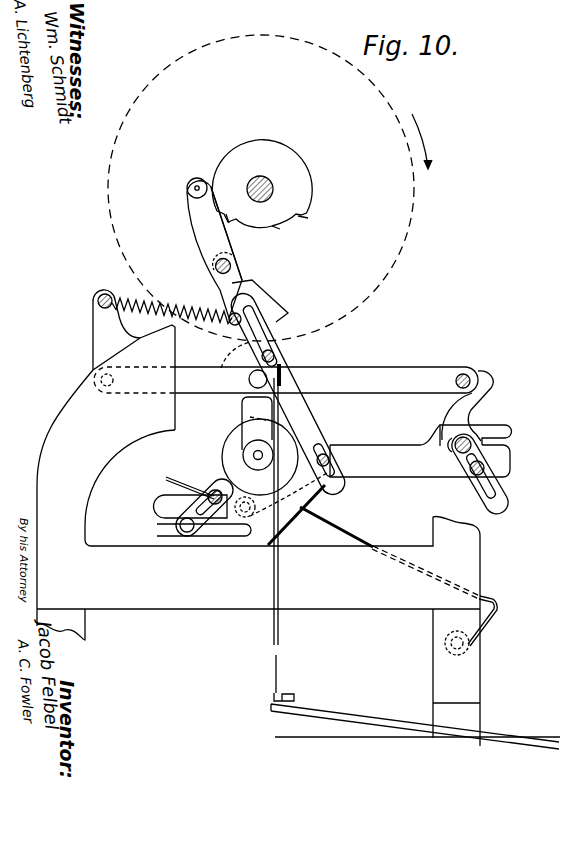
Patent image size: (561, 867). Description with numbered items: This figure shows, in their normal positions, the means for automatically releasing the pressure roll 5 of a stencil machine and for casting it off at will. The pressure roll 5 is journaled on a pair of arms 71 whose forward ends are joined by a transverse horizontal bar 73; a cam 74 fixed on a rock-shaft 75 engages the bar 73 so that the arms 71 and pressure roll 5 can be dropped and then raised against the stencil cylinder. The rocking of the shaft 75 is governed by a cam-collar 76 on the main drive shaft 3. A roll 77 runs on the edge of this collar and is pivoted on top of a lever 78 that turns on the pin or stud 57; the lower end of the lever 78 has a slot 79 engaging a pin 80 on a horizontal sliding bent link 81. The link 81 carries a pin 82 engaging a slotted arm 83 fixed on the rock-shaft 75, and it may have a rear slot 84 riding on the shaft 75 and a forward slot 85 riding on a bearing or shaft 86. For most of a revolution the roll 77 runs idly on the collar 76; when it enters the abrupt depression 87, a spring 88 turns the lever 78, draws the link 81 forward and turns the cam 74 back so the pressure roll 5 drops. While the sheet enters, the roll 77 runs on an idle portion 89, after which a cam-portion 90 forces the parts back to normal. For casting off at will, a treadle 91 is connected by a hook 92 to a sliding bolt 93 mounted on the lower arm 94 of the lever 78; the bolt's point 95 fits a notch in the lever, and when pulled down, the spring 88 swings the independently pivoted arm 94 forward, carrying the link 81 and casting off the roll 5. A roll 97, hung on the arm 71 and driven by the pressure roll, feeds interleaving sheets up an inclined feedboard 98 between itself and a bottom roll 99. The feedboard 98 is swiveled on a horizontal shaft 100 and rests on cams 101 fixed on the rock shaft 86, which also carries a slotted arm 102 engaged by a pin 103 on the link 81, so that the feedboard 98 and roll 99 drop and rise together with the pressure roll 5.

The main drive shaft 3 is at (252, 182).
The pressure roll 5 is at (236, 352).
The pin or stud 57 is at (231, 267).
The arms 71 is at (286, 381).
The transverse horizontal bar 73 is at (463, 374).
The cam 74 is at (490, 380).
The rock-shaft 75 is at (470, 440).
The cam-collar 76 is at (262, 184).
The roll 77 is at (186, 185).
The lever 78 is at (199, 247).
The slot 79 is at (330, 482).
The pin 80 is at (329, 456).
The horizontal sliding bent bar or link 81 is at (420, 451).
The pin 82 is at (472, 474).
The slotted arm 83 is at (503, 494).
The slot 84 is at (512, 434).
The slot 85 is at (157, 506).
The bearing or shaft 86 is at (186, 532).
The abrupt depression 87 is at (228, 218).
The spring 88 is at (175, 292).
The idle portion 89 is at (272, 225).
The cam-portion 90 is at (300, 217).
The treadle 91 is at (338, 715).
The hook 92 is at (290, 625).
The sliding bolt 93 is at (275, 354).
The lower arm 94 is at (303, 408).
The point 95 is at (254, 286).
The roll 97 is at (244, 435).
The inclined feedboard 98 is at (365, 540).
The bottom roll 99 is at (276, 530).
The horizontal shaft 100 is at (455, 652).
The cams 101 is at (182, 482).
The slotted arm 102 is at (240, 517).
The pin 103 is at (216, 484).